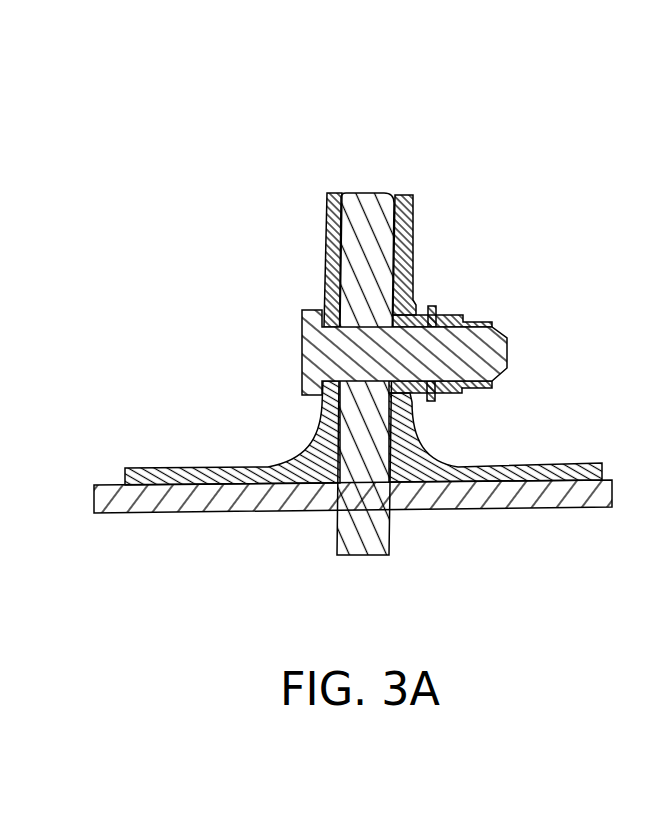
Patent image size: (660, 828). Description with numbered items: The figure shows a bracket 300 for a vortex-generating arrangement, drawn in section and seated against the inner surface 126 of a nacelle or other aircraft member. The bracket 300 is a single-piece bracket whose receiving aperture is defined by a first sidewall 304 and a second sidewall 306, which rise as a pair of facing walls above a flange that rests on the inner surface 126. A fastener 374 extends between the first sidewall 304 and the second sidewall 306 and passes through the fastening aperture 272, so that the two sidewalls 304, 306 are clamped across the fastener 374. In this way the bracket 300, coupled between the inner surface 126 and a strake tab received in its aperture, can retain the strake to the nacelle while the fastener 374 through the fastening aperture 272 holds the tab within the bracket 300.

The bracket 300 is at (313, 105).
The inner surface 126 is at (102, 485).
The first sidewall 304 is at (413, 253).
The second sidewall 306 is at (327, 233).
The fastening aperture 272 is at (367, 327).
The fastener 374 is at (302, 352).